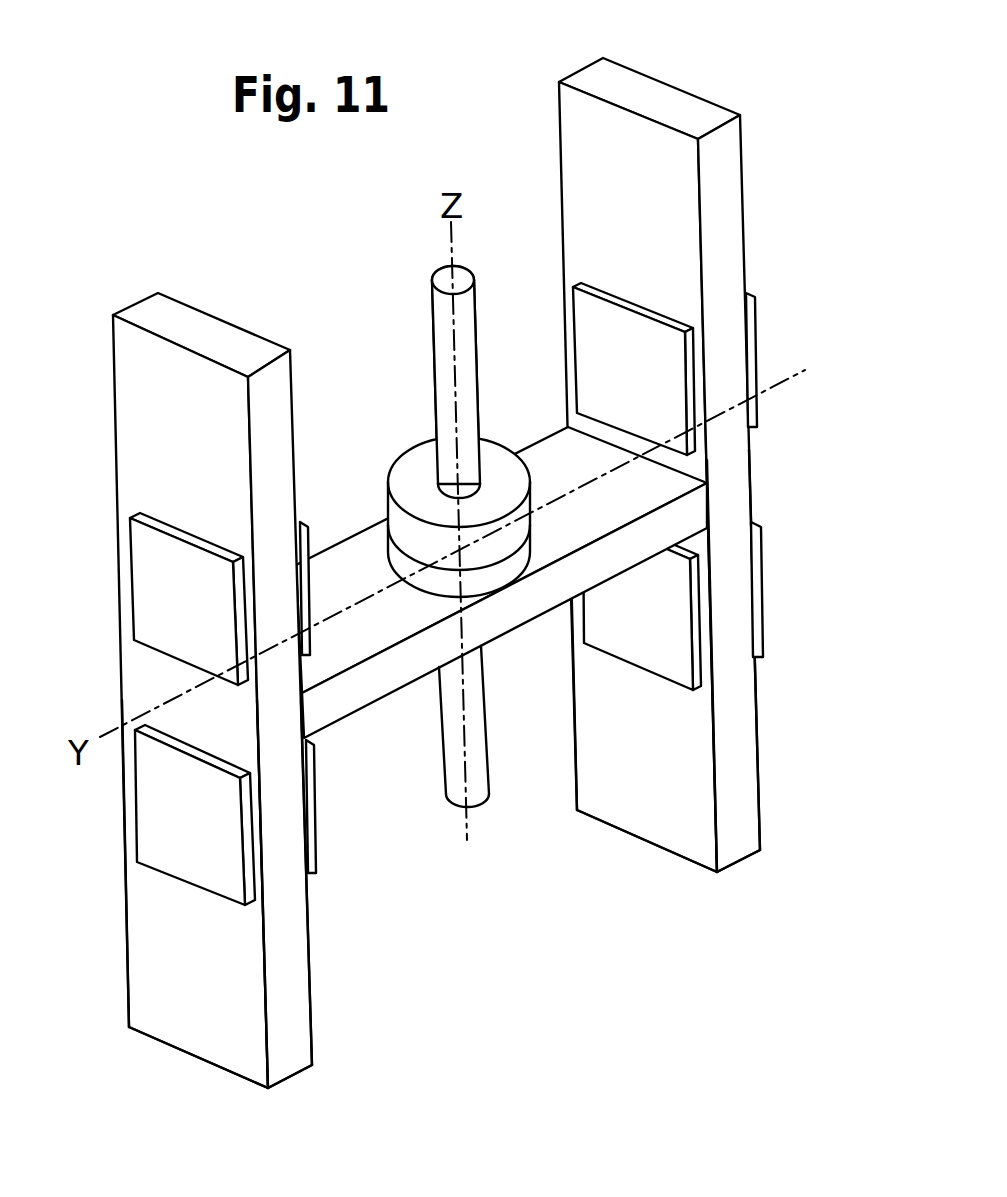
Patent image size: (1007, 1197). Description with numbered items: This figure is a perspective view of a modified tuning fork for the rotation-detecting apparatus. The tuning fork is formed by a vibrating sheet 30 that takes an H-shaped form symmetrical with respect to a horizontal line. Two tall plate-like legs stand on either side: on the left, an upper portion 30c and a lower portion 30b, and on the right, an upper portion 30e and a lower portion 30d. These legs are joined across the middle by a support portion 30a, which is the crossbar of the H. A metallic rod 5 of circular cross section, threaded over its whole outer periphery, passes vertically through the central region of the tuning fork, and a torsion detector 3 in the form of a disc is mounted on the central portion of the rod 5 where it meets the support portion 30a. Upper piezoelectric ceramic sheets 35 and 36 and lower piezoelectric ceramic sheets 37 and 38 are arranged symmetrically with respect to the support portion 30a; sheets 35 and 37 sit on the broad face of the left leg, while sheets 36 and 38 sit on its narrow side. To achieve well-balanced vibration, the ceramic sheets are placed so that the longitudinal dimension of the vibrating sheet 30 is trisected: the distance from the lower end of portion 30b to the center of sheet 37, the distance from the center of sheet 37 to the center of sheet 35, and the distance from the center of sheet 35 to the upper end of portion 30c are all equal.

The torsion detector 3 is at (408, 468).
The metallic rod 5 is at (462, 383).
The vibrating sheet 30 is at (435, 573).
The support portion 30a is at (400, 680).
The portion of the vibrating sheet 30b is at (148, 962).
The portion of the vibrating sheet 30c is at (130, 432).
The portion of the vibrating sheet 30d is at (733, 752).
The portion of the vibrating sheet 30e is at (728, 208).
The upper piezoelectric ceramic sheet 35 is at (142, 580).
The upper piezoelectric ceramic sheet 36 is at (307, 535).
The lower piezoelectric ceramic sheet 37 is at (145, 822).
The lower piezoelectric ceramic sheet 38 is at (312, 832).